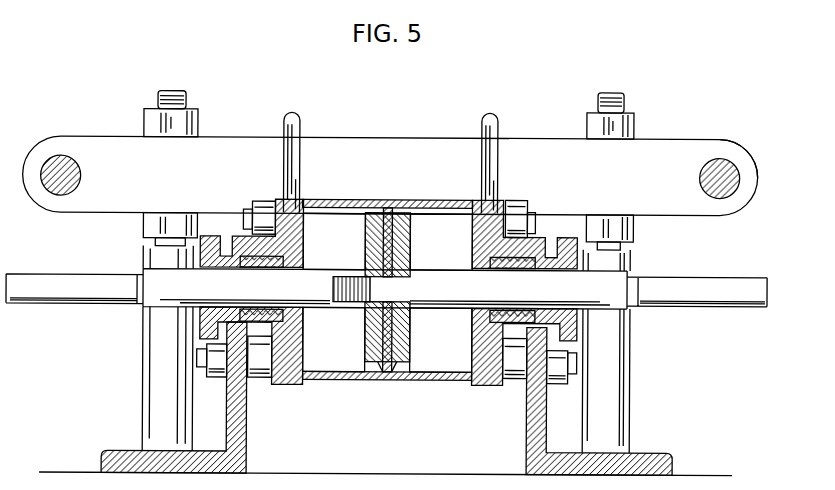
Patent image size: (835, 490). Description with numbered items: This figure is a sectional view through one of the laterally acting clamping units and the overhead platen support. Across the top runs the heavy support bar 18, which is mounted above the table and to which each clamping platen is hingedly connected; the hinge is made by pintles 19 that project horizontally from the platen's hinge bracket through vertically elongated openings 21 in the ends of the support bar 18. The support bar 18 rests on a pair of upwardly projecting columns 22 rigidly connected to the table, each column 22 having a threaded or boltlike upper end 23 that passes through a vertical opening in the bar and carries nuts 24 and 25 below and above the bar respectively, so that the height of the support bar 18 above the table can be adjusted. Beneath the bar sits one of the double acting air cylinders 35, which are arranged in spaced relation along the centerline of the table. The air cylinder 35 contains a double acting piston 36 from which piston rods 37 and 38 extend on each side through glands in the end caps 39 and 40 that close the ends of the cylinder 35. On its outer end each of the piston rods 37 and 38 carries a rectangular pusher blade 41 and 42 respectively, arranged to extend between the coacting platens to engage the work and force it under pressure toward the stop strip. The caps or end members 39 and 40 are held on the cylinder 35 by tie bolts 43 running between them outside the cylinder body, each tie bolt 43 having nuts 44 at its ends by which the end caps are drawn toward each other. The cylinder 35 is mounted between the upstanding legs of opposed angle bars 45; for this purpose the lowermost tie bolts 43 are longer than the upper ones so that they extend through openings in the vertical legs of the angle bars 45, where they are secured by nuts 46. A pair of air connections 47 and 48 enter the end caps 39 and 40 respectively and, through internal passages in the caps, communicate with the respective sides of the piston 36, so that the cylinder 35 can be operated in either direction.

The support bar 18 is at (408, 144).
The pintle 19 is at (718, 173).
The vertically elongated opening 21 is at (702, 160).
The column 22 is at (622, 353).
The threaded upper end 23 is at (617, 95).
The nut 24 is at (633, 232).
The nut 25 is at (635, 125).
The double acting air cylinder 35 is at (371, 192).
The double acting piston 36 is at (387, 245).
The piston rod 37 is at (428, 277).
The piston rod 38 is at (318, 276).
The end cap 39 is at (477, 346).
The end cap 40 is at (298, 348).
The pusher blade 41 is at (690, 282).
The pusher blade 42 is at (53, 278).
The tie bolt 43 is at (532, 218).
The nut 44 is at (256, 204).
The angle bar 45 is at (244, 455).
The nut 46 is at (217, 381).
The air connection 47 is at (295, 183).
The air connection 48 is at (494, 180).